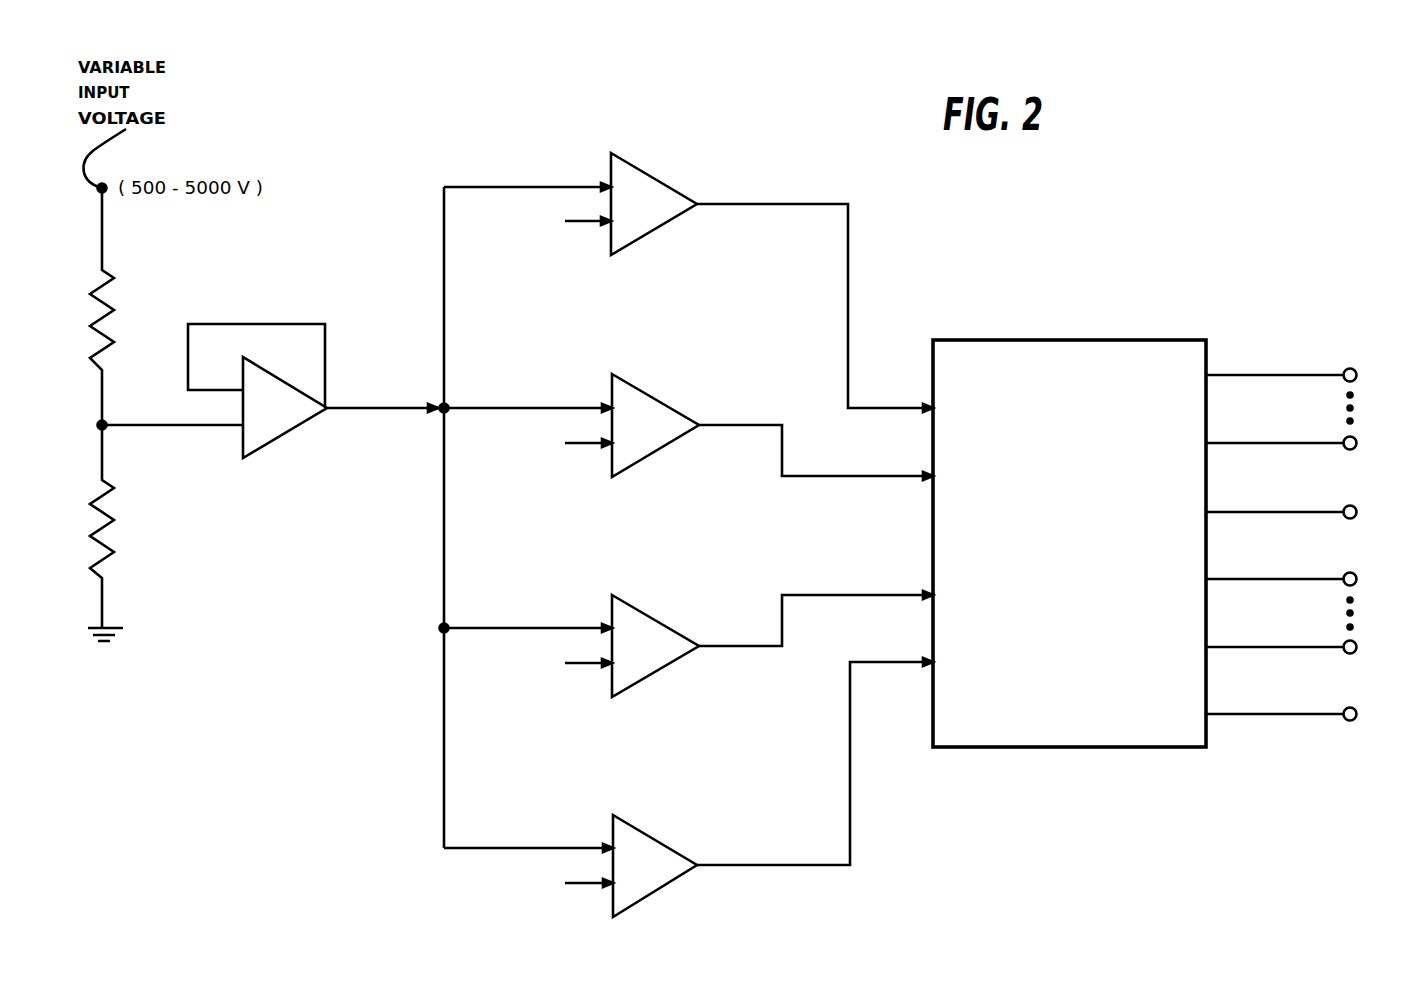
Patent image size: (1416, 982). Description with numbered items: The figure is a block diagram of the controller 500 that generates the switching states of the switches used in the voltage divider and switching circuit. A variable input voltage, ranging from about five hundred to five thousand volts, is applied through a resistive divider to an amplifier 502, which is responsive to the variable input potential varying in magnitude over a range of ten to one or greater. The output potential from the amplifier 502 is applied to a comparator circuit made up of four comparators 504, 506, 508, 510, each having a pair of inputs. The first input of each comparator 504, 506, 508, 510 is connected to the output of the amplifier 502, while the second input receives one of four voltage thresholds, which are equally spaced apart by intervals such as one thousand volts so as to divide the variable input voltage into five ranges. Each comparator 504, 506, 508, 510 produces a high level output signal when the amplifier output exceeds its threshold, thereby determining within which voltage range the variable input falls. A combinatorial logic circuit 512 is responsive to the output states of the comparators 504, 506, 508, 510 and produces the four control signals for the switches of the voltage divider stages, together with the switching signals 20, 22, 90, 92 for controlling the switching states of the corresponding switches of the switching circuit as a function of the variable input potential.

The controller 500 is at (917, 298).
The amplifier 502 is at (285, 419).
The comparator 504 is at (643, 193).
The comparator 506 is at (647, 418).
The comparator 508 is at (653, 647).
The comparator 510 is at (655, 853).
The combinatorial logic circuit 512 is at (1060, 352).
The switching signal 20 is at (1295, 513).
The switching signal 22 is at (1294, 580).
The switching signal 90 is at (1295, 648).
The switching signal 92 is at (1295, 715).